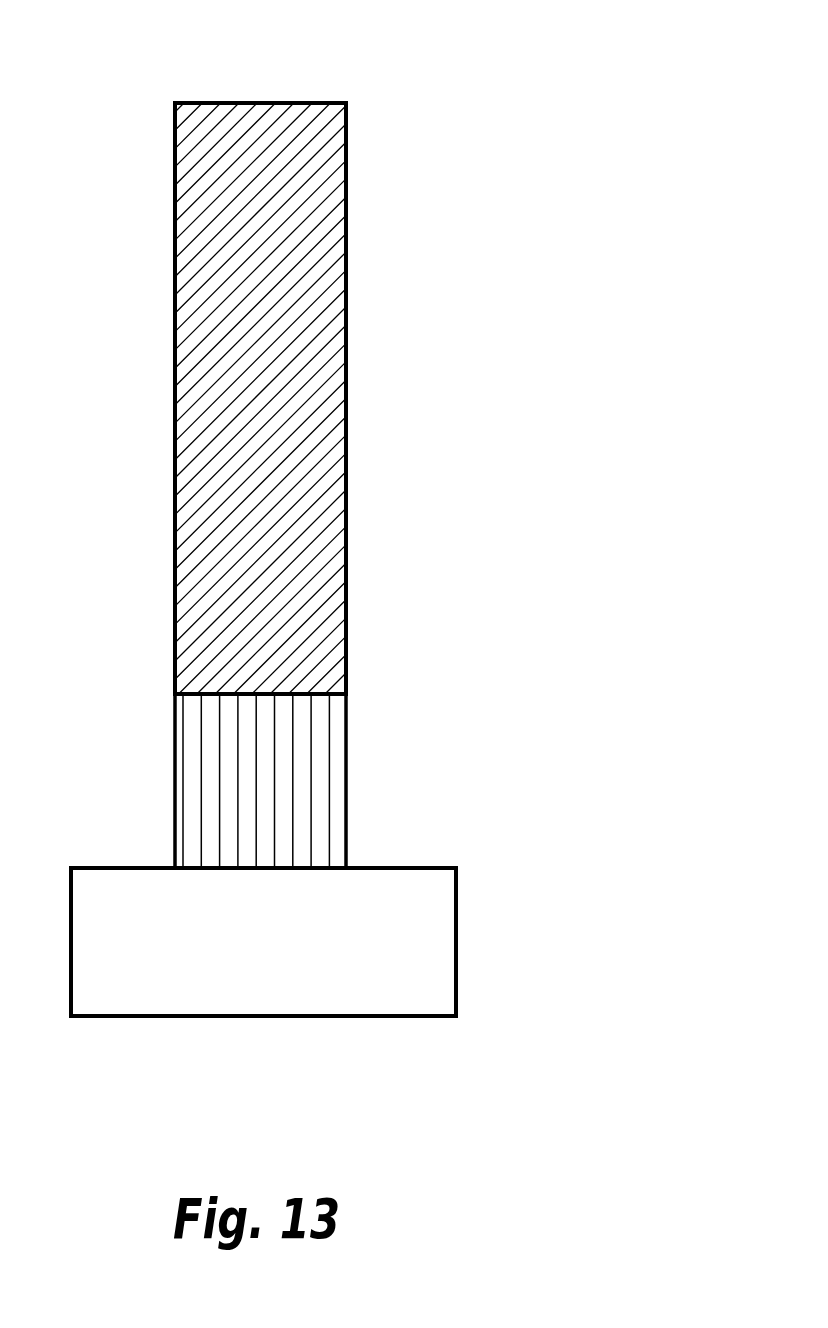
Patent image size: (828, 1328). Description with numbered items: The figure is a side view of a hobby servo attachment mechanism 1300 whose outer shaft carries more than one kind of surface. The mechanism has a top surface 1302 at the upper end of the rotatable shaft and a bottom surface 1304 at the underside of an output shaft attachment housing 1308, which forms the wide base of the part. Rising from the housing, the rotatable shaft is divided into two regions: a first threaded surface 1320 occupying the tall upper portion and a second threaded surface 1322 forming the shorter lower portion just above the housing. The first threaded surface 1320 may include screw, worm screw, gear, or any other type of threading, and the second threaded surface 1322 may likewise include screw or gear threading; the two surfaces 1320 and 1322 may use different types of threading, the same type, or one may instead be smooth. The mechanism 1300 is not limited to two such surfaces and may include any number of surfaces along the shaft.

The hobby servo attachment mechanism 1300 is at (608, 153).
The top surface 1302 is at (320, 107).
The bottom surface 1304 is at (385, 1016).
The output shaft attachment housing 1308 is at (445, 927).
The first threaded surface 1320 is at (348, 488).
The second threaded surface 1322 is at (346, 743).